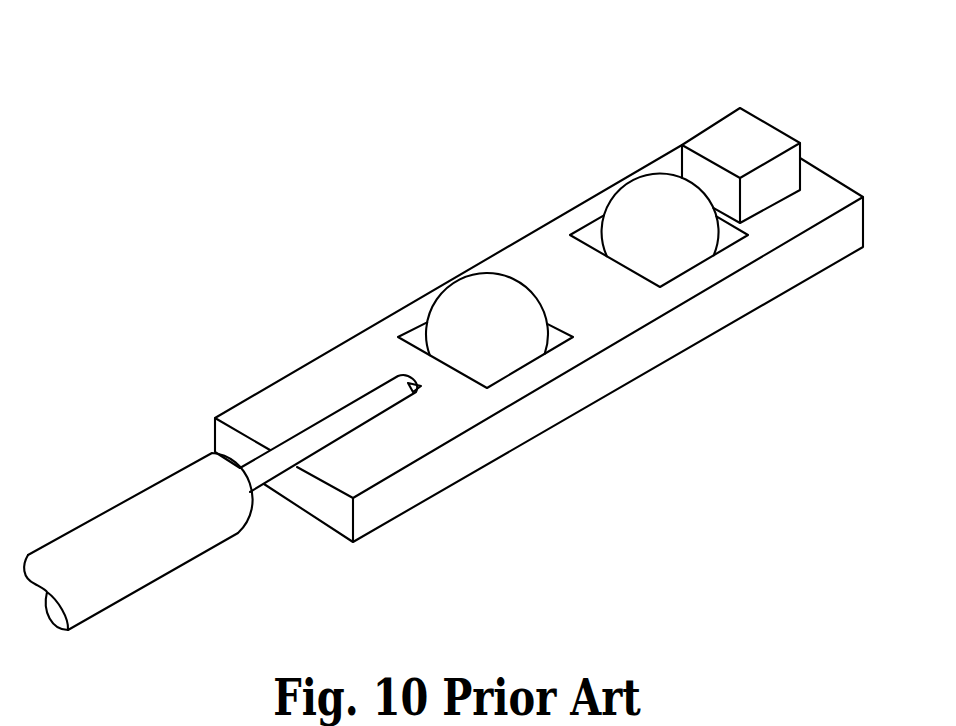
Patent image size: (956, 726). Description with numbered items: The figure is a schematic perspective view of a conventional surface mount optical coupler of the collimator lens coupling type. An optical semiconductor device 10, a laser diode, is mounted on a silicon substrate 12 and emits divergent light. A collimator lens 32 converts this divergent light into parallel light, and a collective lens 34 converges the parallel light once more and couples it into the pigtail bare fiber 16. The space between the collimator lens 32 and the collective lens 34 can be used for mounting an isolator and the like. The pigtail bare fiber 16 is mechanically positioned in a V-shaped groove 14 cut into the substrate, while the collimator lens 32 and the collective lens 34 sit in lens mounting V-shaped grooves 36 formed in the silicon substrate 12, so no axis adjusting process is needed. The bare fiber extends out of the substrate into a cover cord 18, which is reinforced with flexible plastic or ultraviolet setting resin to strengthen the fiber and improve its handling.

The optical semiconductor device 10 is at (755, 142).
The silicon substrate 12 is at (802, 255).
The V-shaped groove 14 is at (413, 393).
The pigtail bare fiber 16 is at (360, 412).
The cover cord 18 is at (132, 532).
The collimator lens 32 is at (640, 220).
The collective lens 34 is at (475, 297).
The lens mounting V-shaped grooves 36 is at (732, 233).